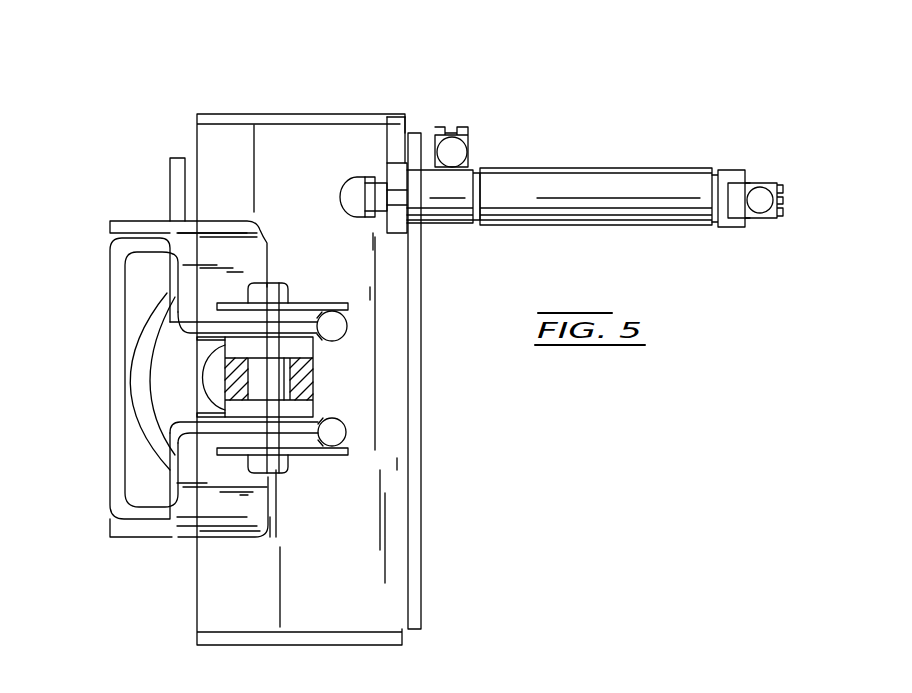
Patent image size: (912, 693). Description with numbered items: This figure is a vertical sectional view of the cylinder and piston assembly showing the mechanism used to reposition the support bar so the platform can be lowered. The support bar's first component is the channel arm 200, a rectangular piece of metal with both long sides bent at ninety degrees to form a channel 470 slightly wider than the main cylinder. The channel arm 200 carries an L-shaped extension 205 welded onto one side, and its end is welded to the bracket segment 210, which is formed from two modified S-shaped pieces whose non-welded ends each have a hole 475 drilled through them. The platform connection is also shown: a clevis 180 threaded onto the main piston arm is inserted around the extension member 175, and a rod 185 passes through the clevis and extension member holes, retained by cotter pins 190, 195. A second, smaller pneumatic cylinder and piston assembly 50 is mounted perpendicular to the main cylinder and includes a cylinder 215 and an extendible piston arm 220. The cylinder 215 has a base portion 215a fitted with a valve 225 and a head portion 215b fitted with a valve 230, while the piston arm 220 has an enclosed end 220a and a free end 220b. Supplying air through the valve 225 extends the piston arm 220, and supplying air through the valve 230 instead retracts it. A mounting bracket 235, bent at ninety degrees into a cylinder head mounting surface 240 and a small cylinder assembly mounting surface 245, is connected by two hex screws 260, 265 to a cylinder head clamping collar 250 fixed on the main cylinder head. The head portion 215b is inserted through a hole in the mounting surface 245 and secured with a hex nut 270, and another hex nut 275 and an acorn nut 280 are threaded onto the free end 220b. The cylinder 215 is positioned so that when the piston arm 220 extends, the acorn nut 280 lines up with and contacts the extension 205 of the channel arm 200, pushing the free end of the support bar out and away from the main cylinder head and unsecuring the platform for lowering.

The pneumatic cylinder and piston assembly 50 is at (614, 182).
The extension member 175 is at (313, 378).
The clevis 180 is at (220, 342).
The rod 185 is at (268, 283).
The cotter pin 190 is at (300, 457).
The cotter pin 195 is at (284, 283).
The channel arm 200 is at (112, 345).
The extension 205 is at (175, 178).
The bracket segment 210 is at (113, 227).
The cylinder 215 is at (594, 195).
The base portion 215a is at (705, 213).
The head portion 215b is at (443, 210).
The extendible piston arm 220 is at (400, 255).
The enclosed end 220a is at (399, 135).
The free end 220b is at (407, 118).
The valve 225 is at (760, 195).
The valve 230 is at (461, 143).
The mounting bracket 235 is at (438, 520).
The cylinder head mounting surface 240 is at (397, 458).
The small cylinder assembly mounting surface 245 is at (413, 425).
The cylinder head clamping collar 250 is at (155, 418).
The hex screw 260 is at (345, 425).
The hex screw 265 is at (347, 325).
The hex nut 270 is at (386, 165).
The hex nut 275 is at (368, 177).
The acorn nut 280 is at (355, 177).
The channel 470 is at (144, 293).
The hole 475 is at (260, 327).